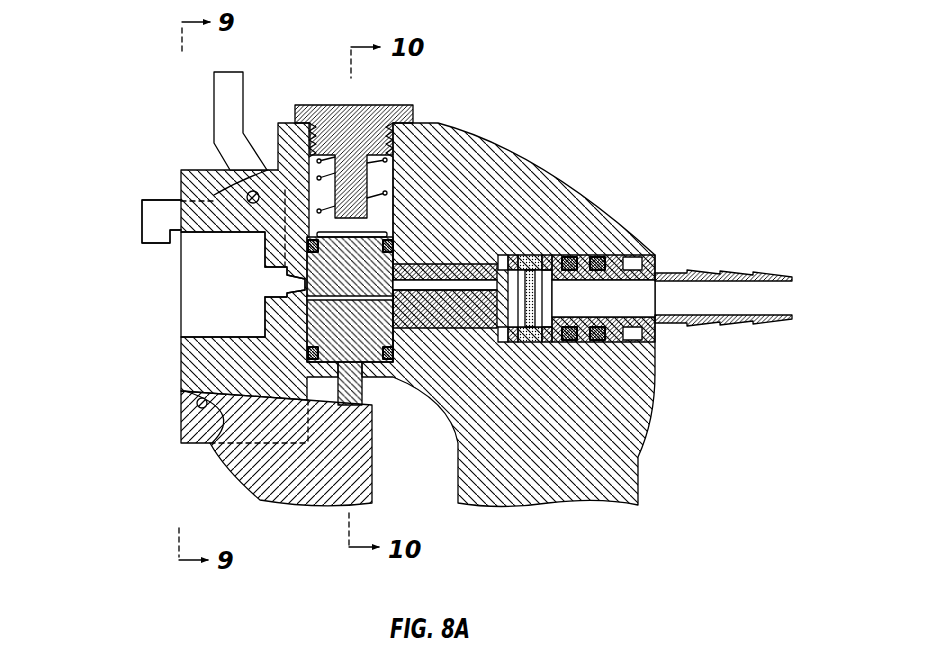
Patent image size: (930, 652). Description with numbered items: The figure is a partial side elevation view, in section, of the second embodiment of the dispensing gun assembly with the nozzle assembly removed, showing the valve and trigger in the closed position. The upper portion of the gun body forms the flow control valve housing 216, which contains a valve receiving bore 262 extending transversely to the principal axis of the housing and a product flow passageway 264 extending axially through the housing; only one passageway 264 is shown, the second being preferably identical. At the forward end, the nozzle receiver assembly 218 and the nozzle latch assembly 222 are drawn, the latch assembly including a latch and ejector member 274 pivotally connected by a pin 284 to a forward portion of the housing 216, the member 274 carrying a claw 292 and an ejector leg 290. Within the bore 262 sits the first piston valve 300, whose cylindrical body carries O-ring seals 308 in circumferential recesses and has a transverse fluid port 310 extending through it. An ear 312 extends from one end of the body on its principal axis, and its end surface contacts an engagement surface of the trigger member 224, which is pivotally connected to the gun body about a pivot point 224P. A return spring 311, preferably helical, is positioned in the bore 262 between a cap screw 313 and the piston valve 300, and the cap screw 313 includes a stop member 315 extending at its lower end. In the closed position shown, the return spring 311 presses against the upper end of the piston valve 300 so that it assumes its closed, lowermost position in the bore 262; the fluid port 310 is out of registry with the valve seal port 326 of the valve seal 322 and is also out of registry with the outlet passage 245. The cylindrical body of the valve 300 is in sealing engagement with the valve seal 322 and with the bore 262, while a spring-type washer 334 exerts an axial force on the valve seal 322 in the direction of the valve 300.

The flow control valve housing 216 is at (535, 170).
The nozzle receiver assembly 218 is at (330, 300).
The nozzle latch assembly 222 is at (161, 192).
The trigger member 224 is at (258, 467).
The pivot point 224P is at (197, 407).
The outlet passage 245 is at (285, 290).
The valve receiving bore 262 is at (392, 168).
The product flow passageway 264 is at (636, 256).
The latch and ejector member 274 is at (216, 100).
The pin 284 is at (224, 166).
The ejector leg 290 is at (263, 250).
The claw 292 is at (143, 238).
The first piston valve 300 is at (310, 353).
The seal 308 is at (186, 390).
The transverse fluid port 310 is at (312, 338).
The return spring 311 is at (396, 268).
The ear 312 is at (362, 392).
The cap screw 313 is at (348, 104).
The stop member 315 is at (385, 183).
The valve seal 322 is at (483, 284).
The valve seal port 326 is at (490, 266).
The spring-type washer 334 is at (548, 338).